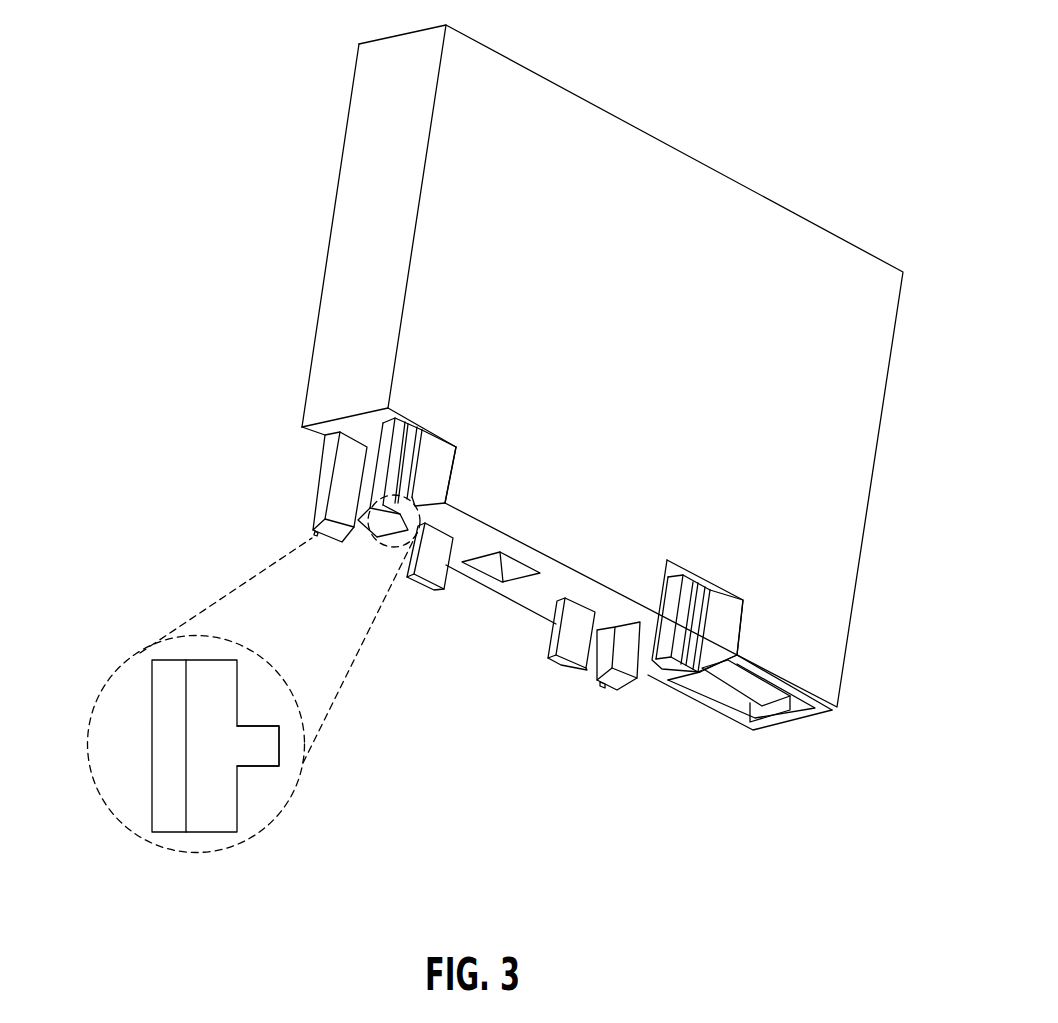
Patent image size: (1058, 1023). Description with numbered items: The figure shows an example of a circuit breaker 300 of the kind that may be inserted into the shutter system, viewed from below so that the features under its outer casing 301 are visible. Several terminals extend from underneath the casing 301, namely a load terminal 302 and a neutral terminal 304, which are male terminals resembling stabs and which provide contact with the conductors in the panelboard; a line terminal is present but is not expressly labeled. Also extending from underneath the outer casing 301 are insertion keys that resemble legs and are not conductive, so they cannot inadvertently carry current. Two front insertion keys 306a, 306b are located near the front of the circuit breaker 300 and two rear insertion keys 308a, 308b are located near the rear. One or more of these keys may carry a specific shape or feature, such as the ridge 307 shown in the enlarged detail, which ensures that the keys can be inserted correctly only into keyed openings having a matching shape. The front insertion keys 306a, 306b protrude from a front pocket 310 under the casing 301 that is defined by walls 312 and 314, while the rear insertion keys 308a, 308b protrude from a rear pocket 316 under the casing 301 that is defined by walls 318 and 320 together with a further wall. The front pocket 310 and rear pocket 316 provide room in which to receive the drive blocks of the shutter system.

The circuit breaker 300 is at (822, 183).
The outer casing 301 is at (350, 173).
The load terminal 302 is at (433, 568).
The neutral terminal 304 is at (573, 642).
The front insertion key 306a is at (323, 497).
The front insertion key 306b is at (378, 465).
The ridge 307 is at (279, 746).
The rear insertion key 308a is at (622, 690).
The rear insertion key 308b is at (703, 668).
The front pocket 310 is at (358, 427).
The wall 312 is at (443, 453).
The wall 314 is at (434, 485).
The rear pocket 316 is at (718, 656).
The wall 318 is at (716, 598).
The wall 320 is at (724, 633).